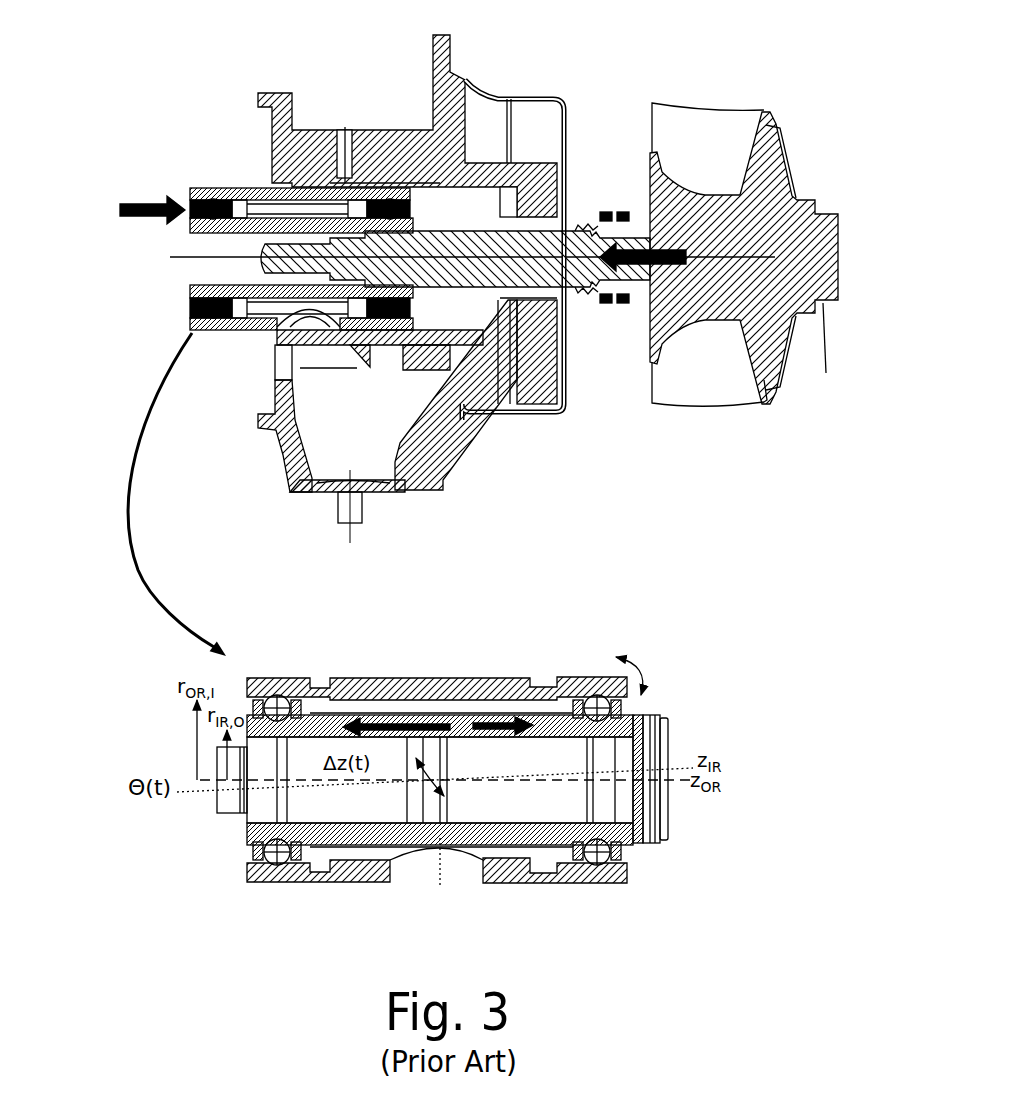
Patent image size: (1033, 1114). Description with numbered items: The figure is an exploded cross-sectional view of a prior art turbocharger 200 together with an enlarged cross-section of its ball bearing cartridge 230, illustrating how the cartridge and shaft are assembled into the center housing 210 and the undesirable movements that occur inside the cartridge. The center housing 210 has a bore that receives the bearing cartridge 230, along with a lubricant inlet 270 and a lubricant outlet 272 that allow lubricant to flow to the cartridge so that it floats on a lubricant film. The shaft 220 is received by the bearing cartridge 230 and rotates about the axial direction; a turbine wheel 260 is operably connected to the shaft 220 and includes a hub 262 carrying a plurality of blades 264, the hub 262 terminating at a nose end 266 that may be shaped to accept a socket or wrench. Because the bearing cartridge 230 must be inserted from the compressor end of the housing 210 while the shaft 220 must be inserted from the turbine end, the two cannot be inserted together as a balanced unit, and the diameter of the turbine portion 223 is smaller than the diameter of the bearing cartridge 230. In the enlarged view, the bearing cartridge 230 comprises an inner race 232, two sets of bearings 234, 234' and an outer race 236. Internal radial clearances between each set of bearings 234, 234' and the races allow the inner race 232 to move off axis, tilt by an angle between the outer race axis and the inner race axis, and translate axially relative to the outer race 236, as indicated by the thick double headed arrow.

The turbocharger 200 is at (228, 44).
The center housing 210 is at (411, 263).
The shaft 220 is at (476, 533).
The turbine portion 223 is at (613, 257).
The bearing cartridge 230 is at (186, 196).
The inner race 232 is at (632, 843).
The bearings 234 is at (502, 794).
The bearings 234' is at (217, 848).
The outer race 236 is at (623, 880).
The turbine wheel 260 is at (744, 239).
The hub 262 is at (744, 258).
The blades 264 is at (724, 150).
The nose end 266 is at (826, 373).
The lubricant inlet 270 is at (345, 130).
The lubricant outlet 272 is at (352, 527).